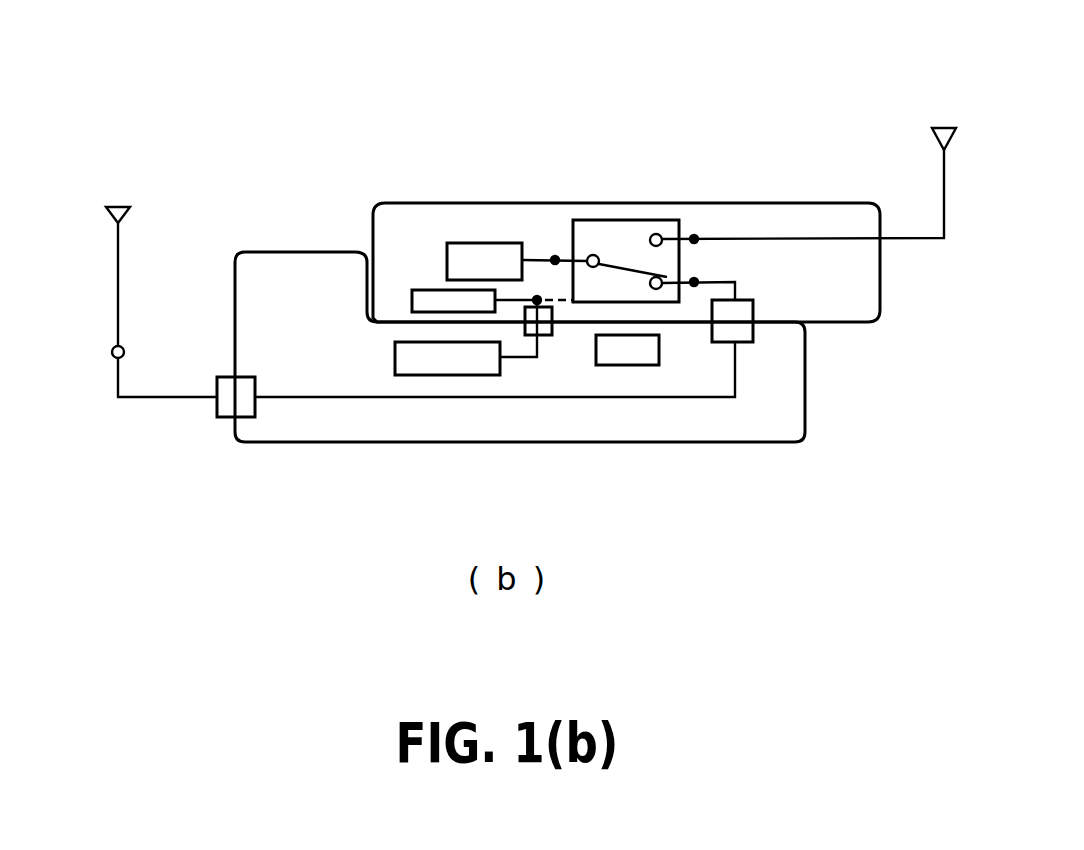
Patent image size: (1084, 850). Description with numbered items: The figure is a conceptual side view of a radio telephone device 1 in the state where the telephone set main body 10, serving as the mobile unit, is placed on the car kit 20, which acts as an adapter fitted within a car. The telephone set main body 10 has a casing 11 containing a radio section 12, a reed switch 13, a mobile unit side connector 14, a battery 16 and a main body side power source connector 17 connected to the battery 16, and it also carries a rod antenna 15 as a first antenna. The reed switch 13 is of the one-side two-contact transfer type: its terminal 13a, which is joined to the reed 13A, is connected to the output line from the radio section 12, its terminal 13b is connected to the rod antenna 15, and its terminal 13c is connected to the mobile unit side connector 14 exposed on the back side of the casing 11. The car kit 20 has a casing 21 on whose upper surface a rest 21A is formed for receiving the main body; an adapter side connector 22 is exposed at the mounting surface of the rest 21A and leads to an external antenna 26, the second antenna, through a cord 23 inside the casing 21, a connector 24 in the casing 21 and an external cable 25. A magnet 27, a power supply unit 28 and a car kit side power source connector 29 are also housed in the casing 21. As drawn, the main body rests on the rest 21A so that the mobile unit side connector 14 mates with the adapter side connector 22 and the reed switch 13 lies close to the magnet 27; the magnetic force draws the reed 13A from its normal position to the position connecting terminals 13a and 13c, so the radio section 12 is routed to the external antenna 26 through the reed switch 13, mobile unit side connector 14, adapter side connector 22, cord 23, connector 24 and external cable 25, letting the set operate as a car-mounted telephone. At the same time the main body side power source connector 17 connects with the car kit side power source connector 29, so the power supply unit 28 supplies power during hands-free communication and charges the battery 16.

The radio telephone device 1 is at (262, 97).
The telephone set main body 10 is at (605, 199).
The casing 11 is at (840, 202).
The radio section 12 is at (478, 258).
The reed switch 13 is at (575, 189).
The reed 13A is at (622, 262).
The terminal 13a is at (556, 257).
The terminal 13b is at (695, 237).
The terminal 13c is at (696, 280).
The mobile unit side connector 14 is at (742, 306).
The rod antenna 15 is at (933, 120).
The battery 16 is at (430, 297).
The main body side power source connector 17 is at (547, 314).
The car kit 20 is at (525, 346).
The casing 21 is at (508, 443).
The rest 21A is at (398, 309).
The adapter side connector 22 is at (753, 336).
The cord 23 is at (360, 398).
The connector 24 is at (228, 424).
The external cable 25 is at (153, 398).
The external antenna 26 is at (116, 199).
The magnet 27 is at (638, 370).
The power supply unit 28 is at (452, 376).
The car kit side power source connector 29 is at (543, 336).